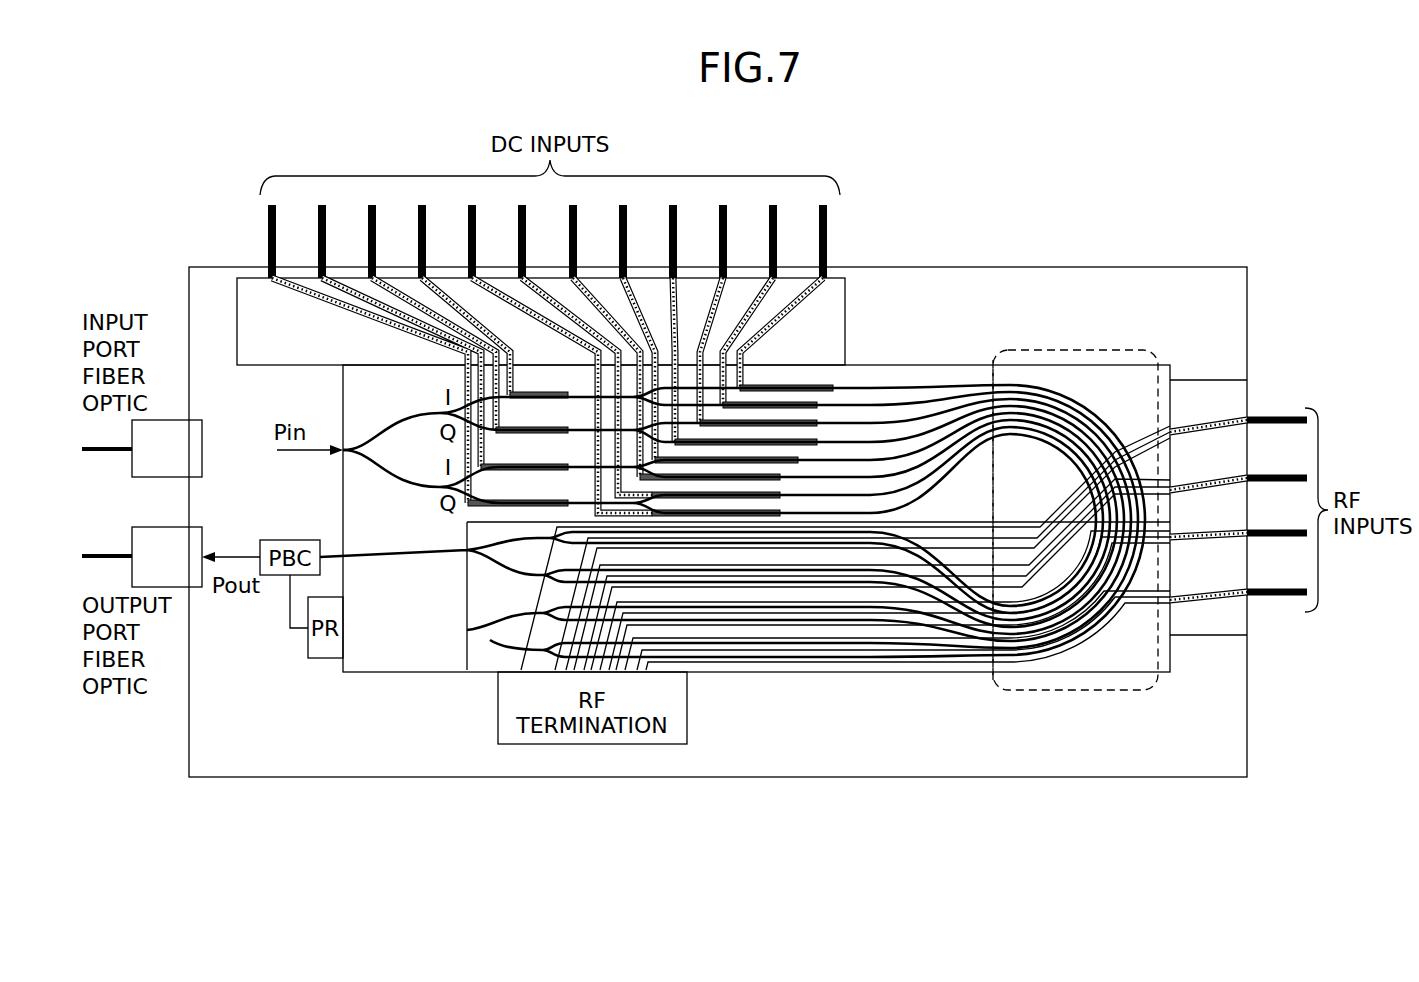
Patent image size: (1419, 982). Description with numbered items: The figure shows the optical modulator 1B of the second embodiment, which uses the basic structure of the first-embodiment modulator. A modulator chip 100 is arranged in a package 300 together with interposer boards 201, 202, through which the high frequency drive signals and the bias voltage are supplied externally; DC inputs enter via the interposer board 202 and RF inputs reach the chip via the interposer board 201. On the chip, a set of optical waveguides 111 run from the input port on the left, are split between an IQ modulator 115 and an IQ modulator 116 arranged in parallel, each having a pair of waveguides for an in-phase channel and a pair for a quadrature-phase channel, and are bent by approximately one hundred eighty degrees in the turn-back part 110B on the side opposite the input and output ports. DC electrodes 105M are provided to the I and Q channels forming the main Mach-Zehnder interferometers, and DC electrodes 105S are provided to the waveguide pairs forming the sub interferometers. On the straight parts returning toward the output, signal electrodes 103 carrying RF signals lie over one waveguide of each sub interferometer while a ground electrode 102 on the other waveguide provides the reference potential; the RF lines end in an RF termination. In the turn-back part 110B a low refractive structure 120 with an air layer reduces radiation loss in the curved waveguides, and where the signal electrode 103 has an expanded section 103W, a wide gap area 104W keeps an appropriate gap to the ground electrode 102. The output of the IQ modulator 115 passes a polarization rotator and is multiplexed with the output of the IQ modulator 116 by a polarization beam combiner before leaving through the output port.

The optical modulator 1B is at (1190, 112).
The package 300 is at (1180, 267).
The interposer board 202 is at (237, 322).
The interposer board 201 is at (1205, 635).
The optical waveguides 111 is at (930, 388).
The modulator chip 100 is at (983, 367).
The turn-back part 110B is at (1018, 690).
The DC electrodes 105S is at (826, 386).
The DC electrodes 105M is at (487, 447).
The IQ modulator 115 is at (418, 397).
The IQ modulator 116 is at (418, 504).
The ground electrode 102 is at (948, 665).
The signal electrode 103 is at (778, 655).
The wide gap area 104W is at (1128, 585).
The expanded section 103W is at (1133, 592).
The low refractive structure 120 is at (1090, 412).